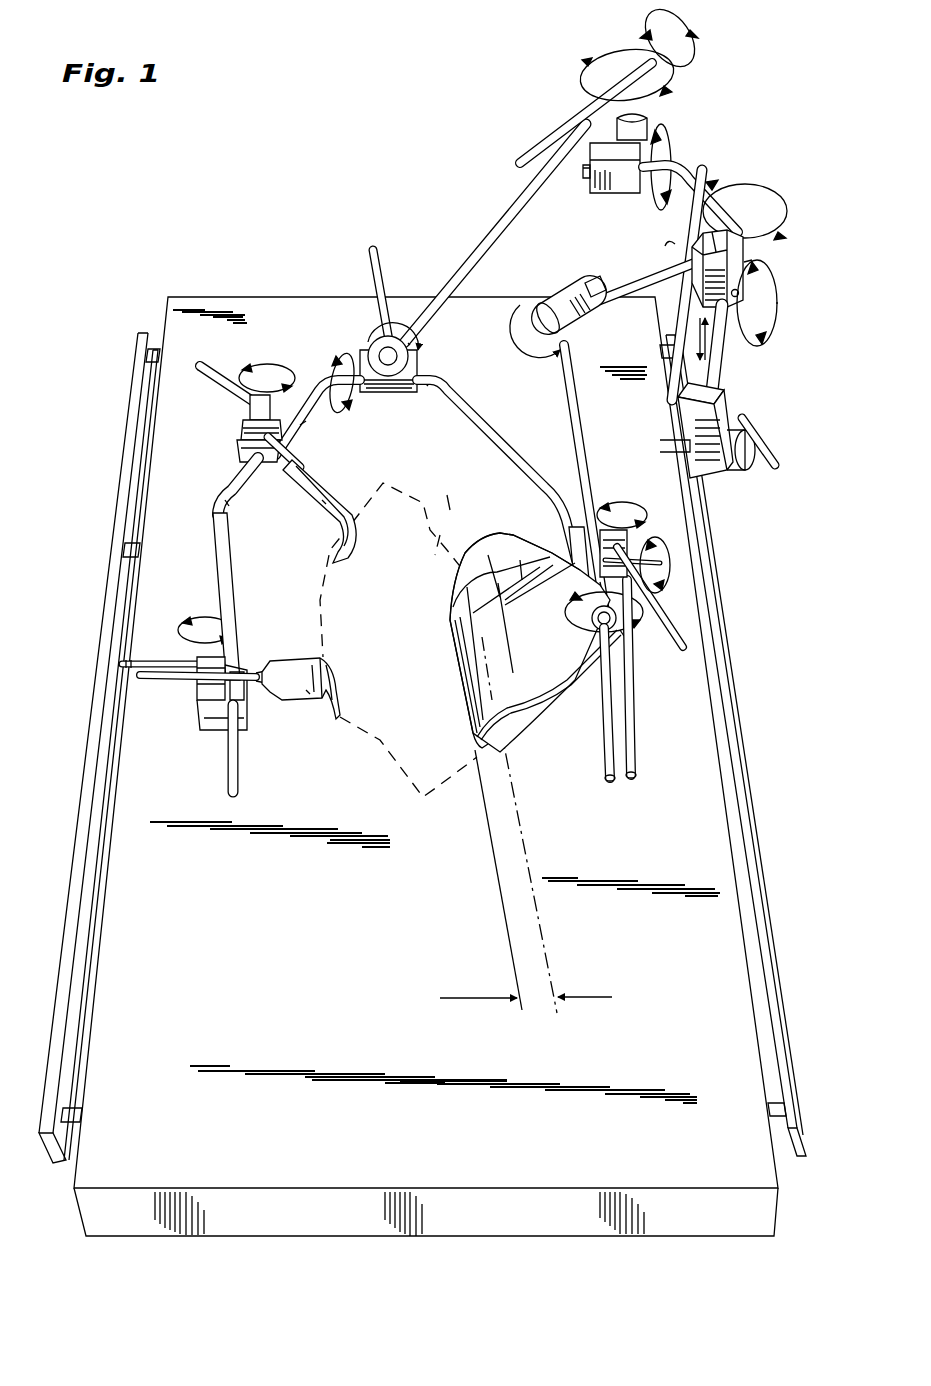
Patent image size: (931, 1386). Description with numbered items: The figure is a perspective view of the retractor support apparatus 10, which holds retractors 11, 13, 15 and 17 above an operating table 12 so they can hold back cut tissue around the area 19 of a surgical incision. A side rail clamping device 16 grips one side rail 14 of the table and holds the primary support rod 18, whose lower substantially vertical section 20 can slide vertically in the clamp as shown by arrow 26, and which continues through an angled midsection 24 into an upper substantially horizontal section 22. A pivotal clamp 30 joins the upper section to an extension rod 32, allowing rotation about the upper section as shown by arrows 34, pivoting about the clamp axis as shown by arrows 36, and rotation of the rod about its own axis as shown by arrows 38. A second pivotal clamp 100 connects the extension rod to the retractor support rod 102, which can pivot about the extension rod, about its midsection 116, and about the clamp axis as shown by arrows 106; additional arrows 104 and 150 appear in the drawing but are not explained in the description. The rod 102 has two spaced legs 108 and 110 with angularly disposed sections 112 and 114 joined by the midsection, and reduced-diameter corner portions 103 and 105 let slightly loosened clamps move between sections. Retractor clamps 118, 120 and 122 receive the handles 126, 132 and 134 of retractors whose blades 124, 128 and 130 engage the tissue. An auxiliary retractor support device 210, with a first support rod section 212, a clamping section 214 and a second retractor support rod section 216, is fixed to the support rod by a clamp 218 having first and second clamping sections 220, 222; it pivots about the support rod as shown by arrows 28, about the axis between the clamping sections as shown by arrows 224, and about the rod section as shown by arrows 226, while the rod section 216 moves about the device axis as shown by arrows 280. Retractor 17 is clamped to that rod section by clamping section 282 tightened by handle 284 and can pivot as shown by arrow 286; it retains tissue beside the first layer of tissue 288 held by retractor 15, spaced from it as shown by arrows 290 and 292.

The retractor support apparatus 10 is at (447, 228).
The retractor 11 is at (306, 698).
The operating table 12 is at (110, 1045).
The retractor 13 is at (330, 505).
The side rail 14 is at (128, 662).
The retractor 15 is at (492, 545).
The side rail clamping device 16 is at (732, 396).
The retractor 17 is at (528, 690).
The primary support rod 18 is at (685, 160).
The area of surgical incision 19 is at (410, 640).
The lower substantially vertical section 20 is at (720, 364).
The upper substantially horizontal section 22 is at (648, 196).
The midsection 24 is at (718, 185).
The arrow 26 is at (695, 330).
The arrows 28 is at (787, 204).
The pivotal clamp 30 is at (645, 122).
The extension rod 32 is at (528, 202).
The arrows 34 is at (668, 158).
The arrows 36 is at (610, 58).
The arrows 38 is at (688, 30).
The second pivotal clamp 100 is at (362, 342).
The retractor support rod 102 is at (215, 494).
The corner portion 103 is at (226, 502).
The arm tube 104 is at (345, 412).
The corner portion 105 is at (600, 492).
The arrows 106 is at (424, 358).
The leg 108 is at (222, 584).
The leg 110 is at (602, 742).
The angularly disposed section 112 is at (300, 426).
The angularly disposed section 114 is at (480, 432).
The midsection 116 is at (420, 390).
The retractor clamp 118 is at (197, 712).
The retractor clamp 120 is at (243, 445).
The retractor clamp 122 is at (625, 540).
The retractor blade 124 is at (302, 664).
The retractor handle 126 is at (248, 668).
The blade 128 is at (320, 484).
The blade 130 is at (570, 540).
The handle 132 is at (280, 470).
The handle 134 is at (664, 584).
The rotation arrow 150 is at (270, 364).
The auxiliary retractor support device 210 is at (545, 296).
The first support rod section 212 is at (650, 276).
The clamping section 214 is at (590, 284).
The second retractor support rod section 216 is at (566, 410).
The clamp 218 is at (750, 258).
The first clamping section 220 is at (777, 278).
The second clamping section 222 is at (716, 244).
The arrows 224 is at (778, 292).
The arrows 226 is at (668, 240).
The arrows 280 is at (512, 338).
The clamping section 282 is at (625, 636).
The handle 284 is at (555, 580).
The arrow 286 is at (580, 630).
The first layer of tissue 288 is at (445, 512).
The arrows 290 is at (488, 998).
The arrows 292 is at (600, 995).